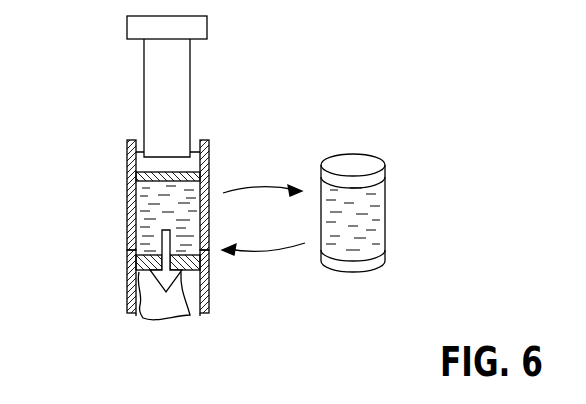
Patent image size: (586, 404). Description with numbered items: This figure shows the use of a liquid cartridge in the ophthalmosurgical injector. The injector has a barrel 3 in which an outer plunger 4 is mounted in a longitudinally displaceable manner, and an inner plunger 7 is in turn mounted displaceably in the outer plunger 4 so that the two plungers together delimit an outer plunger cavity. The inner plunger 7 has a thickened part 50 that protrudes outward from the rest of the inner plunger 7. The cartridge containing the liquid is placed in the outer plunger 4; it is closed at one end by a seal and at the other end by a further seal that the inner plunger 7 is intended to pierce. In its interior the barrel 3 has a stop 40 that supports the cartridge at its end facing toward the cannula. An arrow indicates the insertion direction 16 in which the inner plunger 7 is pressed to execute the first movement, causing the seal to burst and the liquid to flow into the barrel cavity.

The thickened part 50 is at (208, 26).
The inner plunger 7 is at (191, 80).
The barrel 3 is at (127, 284).
The outer plunger 4 is at (127, 243).
The insertion direction 16 is at (190, 315).
The stop 40 is at (143, 318).